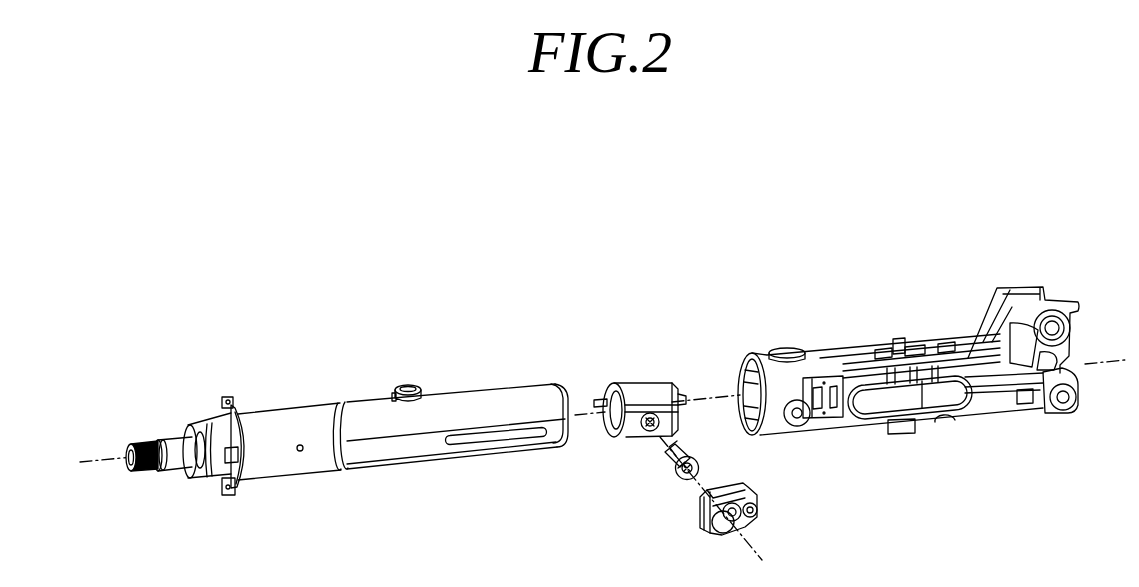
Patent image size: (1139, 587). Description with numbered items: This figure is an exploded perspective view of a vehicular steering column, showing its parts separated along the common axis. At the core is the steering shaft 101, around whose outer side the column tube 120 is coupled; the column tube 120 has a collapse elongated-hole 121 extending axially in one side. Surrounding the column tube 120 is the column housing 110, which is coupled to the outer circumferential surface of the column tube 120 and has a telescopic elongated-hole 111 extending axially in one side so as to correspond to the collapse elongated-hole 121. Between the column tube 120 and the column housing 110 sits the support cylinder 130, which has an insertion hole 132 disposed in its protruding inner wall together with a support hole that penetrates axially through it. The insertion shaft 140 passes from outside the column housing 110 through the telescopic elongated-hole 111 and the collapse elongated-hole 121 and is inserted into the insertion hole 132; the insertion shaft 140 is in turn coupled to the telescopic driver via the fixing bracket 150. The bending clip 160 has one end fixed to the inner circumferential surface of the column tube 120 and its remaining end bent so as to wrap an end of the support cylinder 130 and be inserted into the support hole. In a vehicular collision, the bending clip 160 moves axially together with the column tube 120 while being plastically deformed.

The steering shaft 101 is at (176, 458).
The column housing 110 is at (836, 320).
The telescopic elongated-hole 111 is at (898, 405).
The column tube 120 is at (286, 369).
The collapse elongated-hole 121 is at (498, 434).
The support cylinder 130 is at (629, 353).
The insertion hole 132 is at (660, 383).
The insertion shaft 140 is at (650, 467).
The fixing bracket 150 is at (683, 519).
The bending clip 160 is at (602, 394).